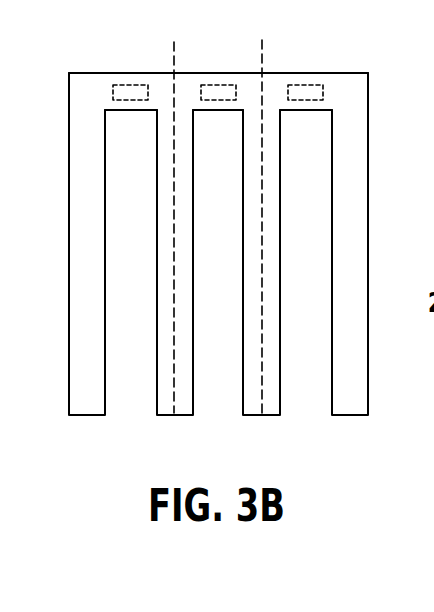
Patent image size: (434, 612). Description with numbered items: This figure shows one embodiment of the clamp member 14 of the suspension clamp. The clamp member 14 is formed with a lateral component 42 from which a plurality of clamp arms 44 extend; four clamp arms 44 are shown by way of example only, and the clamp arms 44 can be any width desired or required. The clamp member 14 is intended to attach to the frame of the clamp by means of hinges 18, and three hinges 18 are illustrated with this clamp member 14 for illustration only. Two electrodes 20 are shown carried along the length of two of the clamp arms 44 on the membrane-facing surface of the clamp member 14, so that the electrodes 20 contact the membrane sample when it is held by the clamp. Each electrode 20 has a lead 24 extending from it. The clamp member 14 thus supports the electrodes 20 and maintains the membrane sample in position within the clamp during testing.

The clamp member 14 is at (217, 226).
The hinge 18 is at (127, 92).
The electrode 20 is at (173, 305).
The lead 24 is at (172, 53).
The lateral component 42 is at (103, 90).
The clamp arm 44 is at (85, 373).